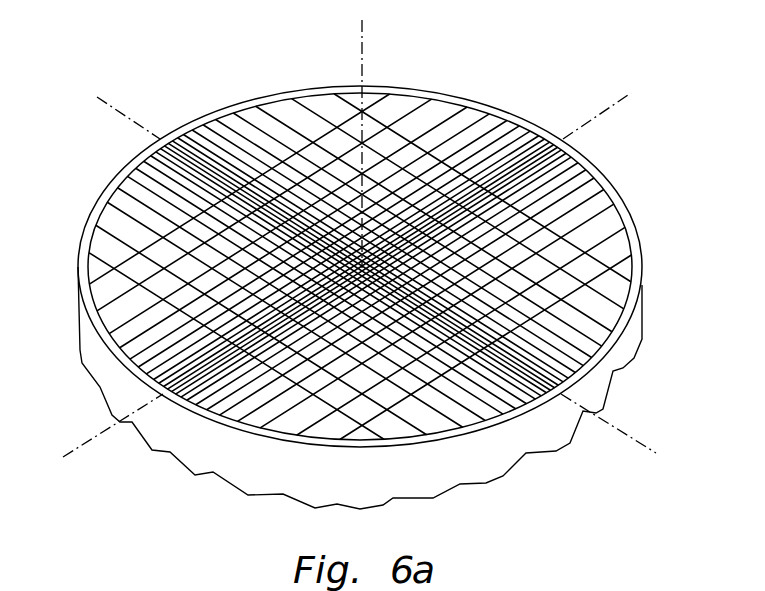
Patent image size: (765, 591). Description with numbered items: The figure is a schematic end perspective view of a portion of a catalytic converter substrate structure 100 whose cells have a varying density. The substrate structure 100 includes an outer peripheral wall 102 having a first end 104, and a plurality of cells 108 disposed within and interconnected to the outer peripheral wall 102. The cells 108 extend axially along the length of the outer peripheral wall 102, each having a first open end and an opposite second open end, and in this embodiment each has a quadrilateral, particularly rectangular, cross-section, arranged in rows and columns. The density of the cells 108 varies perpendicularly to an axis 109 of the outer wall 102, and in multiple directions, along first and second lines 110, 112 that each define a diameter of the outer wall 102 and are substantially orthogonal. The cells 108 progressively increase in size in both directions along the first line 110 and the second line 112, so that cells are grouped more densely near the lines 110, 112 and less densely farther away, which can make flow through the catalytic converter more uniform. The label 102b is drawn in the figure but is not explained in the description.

The catalytic converter substrate structure 100 is at (355, 279).
The outer peripheral wall 102 is at (312, 478).
The substrate edge surface 102b is at (600, 173).
The first end 104 is at (110, 187).
The plurality of cells 108 is at (386, 183).
The axis 109 is at (363, 46).
The first line 110 is at (127, 116).
The second line 112 is at (83, 443).